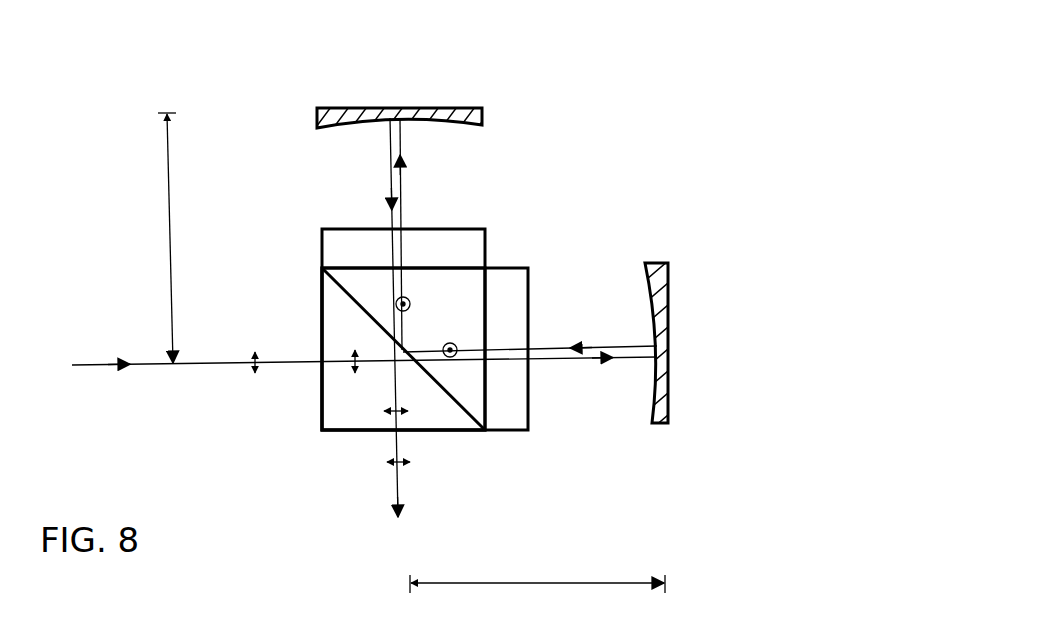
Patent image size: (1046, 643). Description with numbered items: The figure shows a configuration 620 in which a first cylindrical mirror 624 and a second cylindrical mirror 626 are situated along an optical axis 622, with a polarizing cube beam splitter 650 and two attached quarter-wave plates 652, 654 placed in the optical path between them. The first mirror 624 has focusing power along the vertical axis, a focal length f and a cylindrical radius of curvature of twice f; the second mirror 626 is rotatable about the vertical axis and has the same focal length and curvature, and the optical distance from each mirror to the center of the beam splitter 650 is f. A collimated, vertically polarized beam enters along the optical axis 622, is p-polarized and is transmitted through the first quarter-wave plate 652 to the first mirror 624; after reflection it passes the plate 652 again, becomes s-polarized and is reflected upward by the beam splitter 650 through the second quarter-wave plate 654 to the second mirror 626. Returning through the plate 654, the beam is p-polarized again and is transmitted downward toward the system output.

The configuration 620 is at (648, 152).
The optical axis 622 is at (402, 188).
The first cylindrical mirror 624 is at (657, 425).
The second cylindrical mirror 626 is at (317, 120).
The polarizing cube beam splitter 650 is at (445, 432).
The first quarter-wave plate 652 is at (507, 431).
The second quarter-wave plate 654 is at (322, 252).